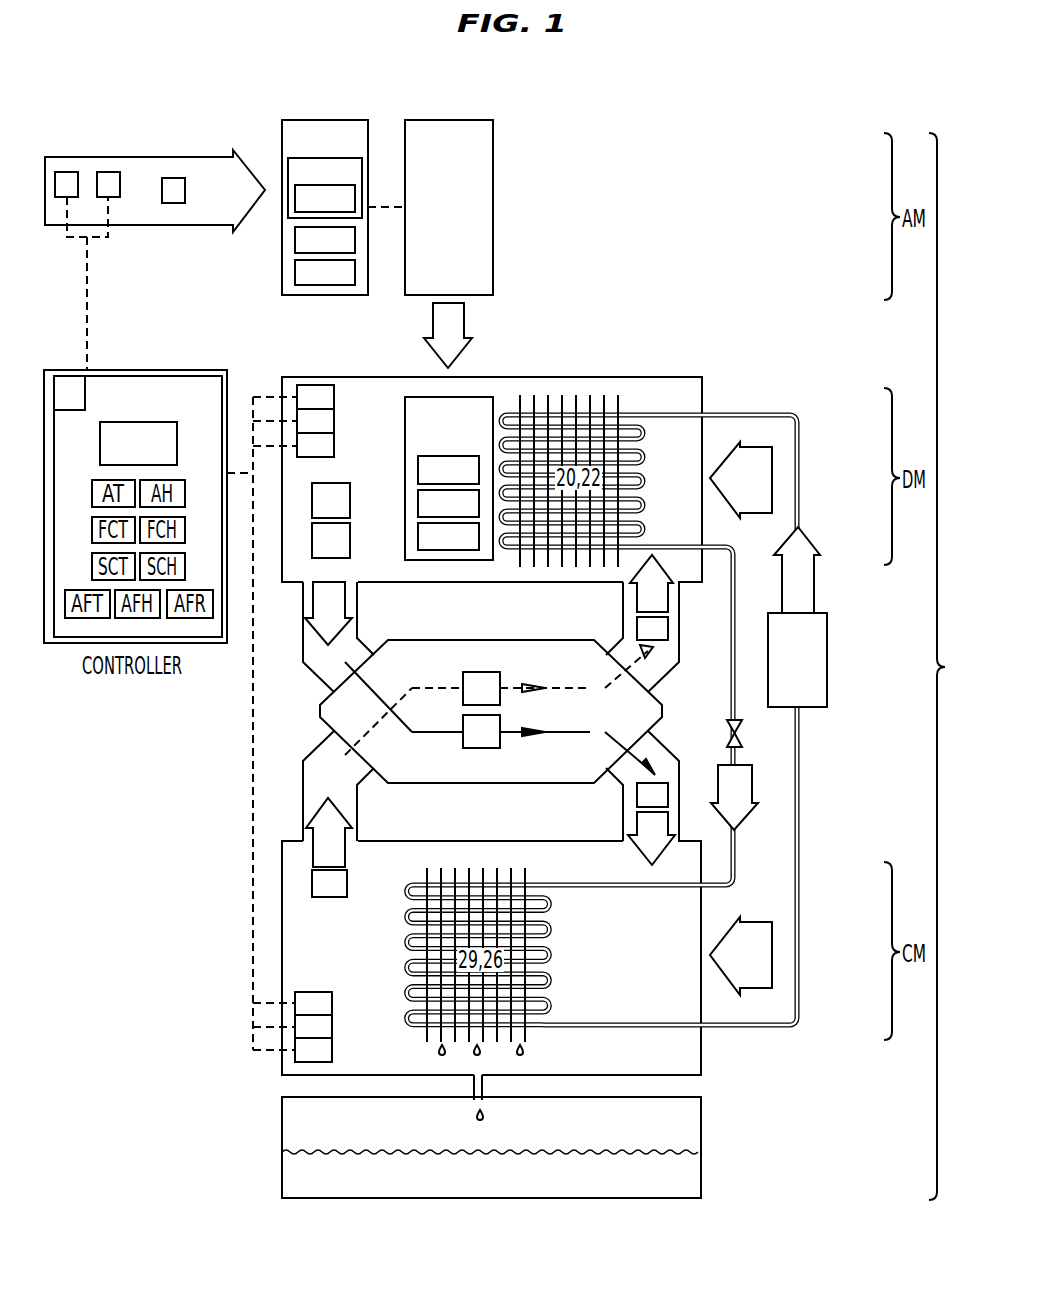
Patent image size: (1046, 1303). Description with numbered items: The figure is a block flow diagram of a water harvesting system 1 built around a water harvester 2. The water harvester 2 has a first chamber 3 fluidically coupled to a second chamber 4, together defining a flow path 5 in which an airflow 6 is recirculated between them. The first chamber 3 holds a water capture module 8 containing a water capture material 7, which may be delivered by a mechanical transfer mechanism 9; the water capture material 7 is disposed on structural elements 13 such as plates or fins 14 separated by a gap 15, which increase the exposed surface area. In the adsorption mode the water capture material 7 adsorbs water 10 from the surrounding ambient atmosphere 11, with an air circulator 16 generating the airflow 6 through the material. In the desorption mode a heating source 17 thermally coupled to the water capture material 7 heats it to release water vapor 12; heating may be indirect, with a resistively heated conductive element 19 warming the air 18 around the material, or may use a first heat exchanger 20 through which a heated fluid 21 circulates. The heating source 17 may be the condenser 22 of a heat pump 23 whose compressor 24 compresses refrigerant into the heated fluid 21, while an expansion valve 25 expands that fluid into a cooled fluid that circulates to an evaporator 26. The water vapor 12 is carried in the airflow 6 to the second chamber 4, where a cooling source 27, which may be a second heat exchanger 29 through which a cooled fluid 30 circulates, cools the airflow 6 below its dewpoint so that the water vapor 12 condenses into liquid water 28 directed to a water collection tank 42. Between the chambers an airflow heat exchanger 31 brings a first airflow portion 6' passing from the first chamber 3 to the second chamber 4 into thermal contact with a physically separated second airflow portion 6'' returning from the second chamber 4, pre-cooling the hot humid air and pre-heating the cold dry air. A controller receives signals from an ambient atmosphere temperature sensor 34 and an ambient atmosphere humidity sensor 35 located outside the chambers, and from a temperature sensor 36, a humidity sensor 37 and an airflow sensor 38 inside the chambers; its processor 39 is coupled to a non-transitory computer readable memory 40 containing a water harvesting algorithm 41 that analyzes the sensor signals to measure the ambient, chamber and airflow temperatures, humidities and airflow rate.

The water harvesting system 1 is at (706, 81).
The water harvester 2 is at (943, 666).
The first chamber 3 is at (682, 377).
The second chamber 4 is at (701, 1062).
The flow path 5 is at (493, 710).
The airflow 6 is at (490, 711).
The first airflow portion 6' is at (501, 731).
The second airflow portion 6'' is at (501, 688).
The water capture material 7 is at (387, 334).
The water capture module 8 is at (303, 150).
The mechanical transfer mechanism 9 is at (434, 154).
The water 10 is at (173, 191).
The ambient atmosphere 11 is at (155, 191).
The water vapor 12 is at (490, 690).
The structural element 13 is at (387, 371).
The plates or fins 14 is at (520, 395).
The gap 15 is at (541, 400).
The air circulator 16 is at (331, 540).
The heating source 17 is at (741, 480).
The air 18 is at (325, 188).
The resistively heated conductive element 19 is at (387, 405).
The first heat exchanger 20 is at (572, 481).
The heated fluid 21 is at (797, 570).
The condenser 22 is at (572, 481).
The heat pump 23 is at (643, 716).
The compressor 24 is at (808, 668).
The expansion valve 25 is at (740, 729).
The evaporator 26 is at (478, 955).
The cooling source 27 is at (741, 956).
The liquid water 28 is at (329, 1191).
The second heat exchanger 29 is at (478, 955).
The cooled fluid 30 is at (734, 797).
The airflow heat exchanger 31 is at (431, 673).
The ambient atmosphere temperature sensor 34 is at (66, 185).
The ambient atmosphere humidity sensor 35 is at (108, 185).
The temperature sensor 36 is at (314, 700).
The humidity sensor 37 is at (314, 724).
The airflow sensor 38 is at (314, 747).
The processor 39 is at (69, 393).
The non-transitory computer readable memory 40 is at (112, 408).
The water harvesting algorithm 41 is at (138, 443).
The water collection tank 42 is at (701, 1178).